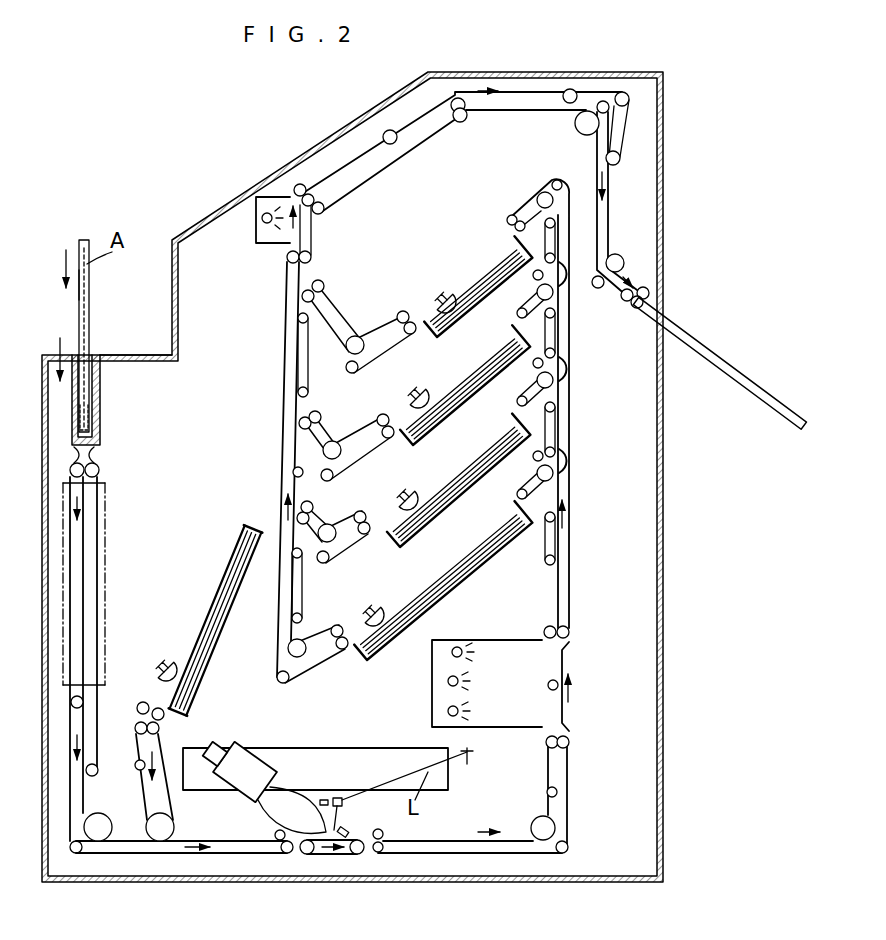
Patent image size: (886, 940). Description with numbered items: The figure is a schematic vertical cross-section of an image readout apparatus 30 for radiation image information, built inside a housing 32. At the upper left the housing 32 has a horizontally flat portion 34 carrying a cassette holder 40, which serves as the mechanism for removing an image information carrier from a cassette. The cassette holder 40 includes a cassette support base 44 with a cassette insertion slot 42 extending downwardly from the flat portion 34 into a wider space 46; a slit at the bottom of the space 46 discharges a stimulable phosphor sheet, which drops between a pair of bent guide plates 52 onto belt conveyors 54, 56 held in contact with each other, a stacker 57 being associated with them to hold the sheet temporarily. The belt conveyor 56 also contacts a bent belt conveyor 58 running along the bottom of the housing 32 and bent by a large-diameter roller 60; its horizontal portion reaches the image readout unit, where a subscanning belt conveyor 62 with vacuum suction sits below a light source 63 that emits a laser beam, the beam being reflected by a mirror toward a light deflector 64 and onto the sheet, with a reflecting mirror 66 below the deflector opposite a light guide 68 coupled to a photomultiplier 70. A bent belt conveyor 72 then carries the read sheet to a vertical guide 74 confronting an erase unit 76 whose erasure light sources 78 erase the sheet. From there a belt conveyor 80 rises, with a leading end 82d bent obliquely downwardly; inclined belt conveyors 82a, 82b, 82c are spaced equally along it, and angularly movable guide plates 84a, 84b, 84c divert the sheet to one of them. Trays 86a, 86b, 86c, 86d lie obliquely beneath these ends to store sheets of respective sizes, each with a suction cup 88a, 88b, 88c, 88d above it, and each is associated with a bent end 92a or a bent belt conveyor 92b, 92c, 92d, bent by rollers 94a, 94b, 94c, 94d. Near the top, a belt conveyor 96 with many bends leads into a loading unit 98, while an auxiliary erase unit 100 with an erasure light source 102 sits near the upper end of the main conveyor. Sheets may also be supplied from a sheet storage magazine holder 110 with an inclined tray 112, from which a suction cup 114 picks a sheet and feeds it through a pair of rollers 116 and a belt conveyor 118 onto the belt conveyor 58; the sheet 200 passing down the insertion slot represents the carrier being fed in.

The image readout apparatus 30 is at (672, 632).
The housing 32 is at (500, 70).
The flat portion 34 is at (152, 354).
The cassette holder 40 is at (56, 347).
The cassette insertion slot 42 is at (92, 354).
The cassette support base 44 is at (101, 384).
The space 46 is at (92, 413).
The guide plates 52 is at (97, 452).
The belt conveyor 54 is at (99, 488).
The belt conveyor 56 is at (92, 532).
The stacker 57 is at (110, 615).
The bent belt conveyor 58 is at (120, 851).
The large-diameter roller / image readout unit 60 is at (102, 822).
The subscanning belt conveyor 62 is at (338, 857).
The light source 63 is at (382, 764).
The light deflector 64 is at (337, 798).
The reflecting mirror 66 is at (349, 829).
The light guide 68 is at (288, 798).
The photomultiplier 70 is at (238, 770).
The bent belt conveyor 72 is at (482, 855).
The vertical guide 74 is at (566, 711).
The erase unit 76 is at (456, 660).
The erasure light sources 78 is at (458, 646).
The belt conveyor 80 is at (572, 426).
The belt conveyor 82a is at (530, 481).
The belt conveyor 82b is at (530, 395).
The belt conveyor 82c is at (522, 310).
The bent leading end 82d is at (530, 200).
The guide plate 84a is at (572, 462).
The guide plate 84b is at (570, 368).
The guide plate 84c is at (569, 278).
The tray 86a is at (510, 548).
The tray 86b is at (467, 494).
The tray 86c is at (466, 408).
The tray 86d is at (462, 329).
The suction cup 88a is at (385, 605).
The suction cup 88b is at (405, 494).
The suction cup 88c is at (412, 400).
The suction cup 88d is at (447, 290).
The bent end 92a is at (320, 640).
The bent belt conveyor 92b is at (345, 528).
The bent belt conveyor 92c is at (362, 438).
The bent belt conveyor 92d is at (380, 333).
The roller 94a is at (292, 652).
The roller 94b is at (320, 537).
The roller 94c is at (323, 452).
The roller 94d is at (356, 336).
The belt conveyor 96 is at (345, 168).
The loading unit 98 is at (647, 273).
The auxiliary erase unit 100 is at (246, 176).
The erasure light source 102 is at (260, 196).
The sheet storage magazine holder 110 is at (208, 620).
The inclined tray 112 is at (248, 572).
The suction cup 114 is at (173, 652).
The rollers 116 is at (142, 701).
The belt conveyor 118 is at (145, 752).
The article 200 is at (94, 281).